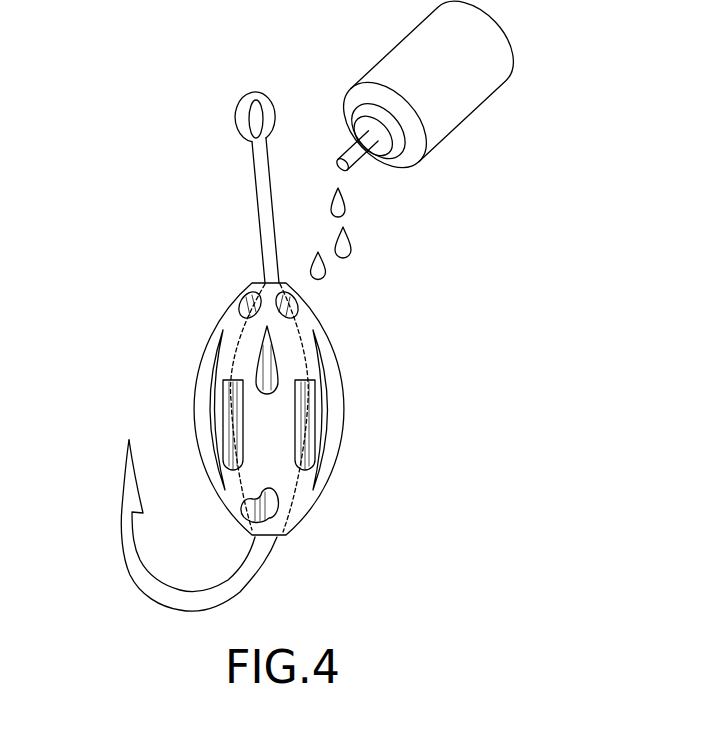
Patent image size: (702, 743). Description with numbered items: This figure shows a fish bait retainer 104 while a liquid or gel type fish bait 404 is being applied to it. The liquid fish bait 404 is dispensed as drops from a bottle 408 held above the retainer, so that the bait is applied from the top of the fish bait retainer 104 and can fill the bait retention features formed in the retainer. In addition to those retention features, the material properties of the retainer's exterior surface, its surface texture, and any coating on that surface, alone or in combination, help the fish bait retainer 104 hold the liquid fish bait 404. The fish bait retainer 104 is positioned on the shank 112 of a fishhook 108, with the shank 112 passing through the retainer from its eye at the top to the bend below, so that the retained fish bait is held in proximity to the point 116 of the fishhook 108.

The fish bait retainer 104 is at (308, 348).
The fishhook 108 is at (221, 187).
The shank 112 is at (268, 258).
The point 116 is at (126, 470).
The liquid fish bait 404 is at (348, 243).
The bottle 408 is at (467, 90).